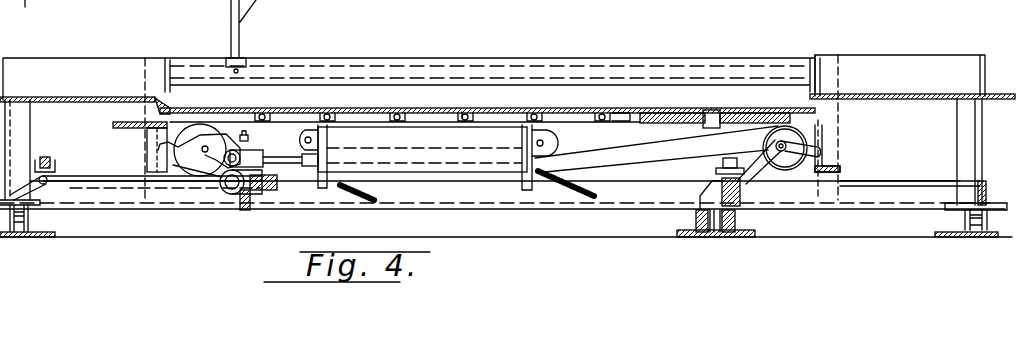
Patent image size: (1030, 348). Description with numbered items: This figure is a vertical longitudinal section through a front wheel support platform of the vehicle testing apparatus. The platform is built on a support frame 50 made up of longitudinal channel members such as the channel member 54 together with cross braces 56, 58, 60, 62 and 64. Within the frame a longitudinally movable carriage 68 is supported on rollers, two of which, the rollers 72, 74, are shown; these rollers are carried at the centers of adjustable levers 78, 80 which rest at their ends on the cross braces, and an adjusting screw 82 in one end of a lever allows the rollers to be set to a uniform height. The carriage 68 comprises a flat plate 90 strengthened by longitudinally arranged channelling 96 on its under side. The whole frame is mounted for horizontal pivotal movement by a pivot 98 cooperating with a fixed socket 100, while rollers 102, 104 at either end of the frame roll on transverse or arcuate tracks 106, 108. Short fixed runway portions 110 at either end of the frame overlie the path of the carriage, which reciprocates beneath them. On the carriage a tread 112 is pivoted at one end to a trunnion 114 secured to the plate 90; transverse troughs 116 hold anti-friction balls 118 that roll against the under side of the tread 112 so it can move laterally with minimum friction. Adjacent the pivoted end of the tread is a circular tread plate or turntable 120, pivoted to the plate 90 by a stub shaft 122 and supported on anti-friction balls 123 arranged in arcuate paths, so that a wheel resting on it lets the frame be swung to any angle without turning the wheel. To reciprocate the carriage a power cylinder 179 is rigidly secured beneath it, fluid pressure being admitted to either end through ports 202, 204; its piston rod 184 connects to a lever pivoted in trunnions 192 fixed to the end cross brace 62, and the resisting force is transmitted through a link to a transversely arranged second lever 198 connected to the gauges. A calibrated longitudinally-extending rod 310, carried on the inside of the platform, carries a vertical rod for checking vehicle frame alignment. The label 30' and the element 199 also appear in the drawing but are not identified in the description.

The short fixed runway portions 110 is at (82, 96).
The longitudinally-extending rod 310 is at (358, 62).
The transverse troughs 116 is at (322, 111).
The tread 112 is at (432, 108).
The anti-friction balls 118 is at (463, 108).
The load platform 30' is at (555, 66).
The trunnion 114 is at (636, 108).
The anti-friction balls 123 is at (662, 110).
The circular tread plate or turntable 120 is at (716, 108).
The stub shaft 122 is at (703, 125).
The support frame 50 is at (919, 178).
The longitudinal channel member 54 is at (867, 190).
The cross brace 56 is at (988, 184).
The roller 102 is at (978, 238).
The transverse or arcuate track 108 is at (952, 238).
The transverse or arcuate track 106 is at (15, 238).
The roller 104 is at (22, 238).
The power cylinder 179 is at (425, 157).
The piston rod 184 is at (300, 152).
The port 204 is at (312, 180).
The flat plate 90 is at (580, 126).
The port 202 is at (546, 170).
The longitudinally arranged channelling 96 is at (626, 150).
The roller 74 is at (772, 153).
The adjustable lever 78 is at (800, 150).
The adjusting screw 82 is at (722, 163).
The cross brace 60 is at (745, 206).
The cross brace 58 is at (831, 178).
The pivot 98 is at (712, 222).
The fixed socket 100 is at (746, 240).
The longitudinally movable carriage 68 is at (213, 145).
The roller 72 is at (248, 139).
The trunnions 192 is at (248, 184).
The adjustable lever 80 is at (199, 172).
The cross brace 62 is at (262, 206).
The cross brace 64 is at (170, 160).
The rod 199 is at (90, 180).
The second lever 198 is at (46, 157).